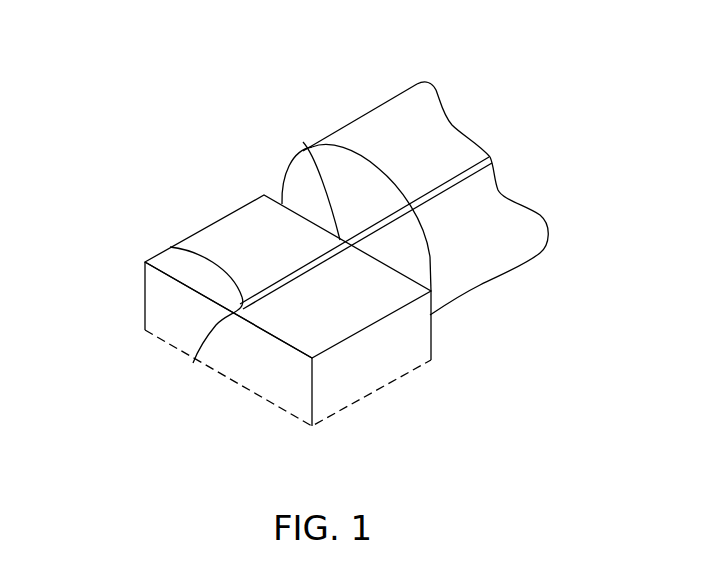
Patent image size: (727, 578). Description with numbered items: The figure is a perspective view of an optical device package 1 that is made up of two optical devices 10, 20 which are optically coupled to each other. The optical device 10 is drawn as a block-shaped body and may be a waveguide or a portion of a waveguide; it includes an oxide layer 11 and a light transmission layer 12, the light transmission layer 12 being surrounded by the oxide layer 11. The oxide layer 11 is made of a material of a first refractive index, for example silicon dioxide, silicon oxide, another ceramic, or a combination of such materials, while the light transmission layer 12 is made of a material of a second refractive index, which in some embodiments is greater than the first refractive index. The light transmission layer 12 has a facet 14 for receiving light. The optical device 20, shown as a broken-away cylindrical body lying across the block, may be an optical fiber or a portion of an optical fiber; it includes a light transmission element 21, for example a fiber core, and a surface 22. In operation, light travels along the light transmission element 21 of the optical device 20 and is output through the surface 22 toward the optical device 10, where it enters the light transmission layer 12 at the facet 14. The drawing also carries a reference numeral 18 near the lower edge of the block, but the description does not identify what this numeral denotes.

The optical device package 1 is at (188, 137).
The optical device 10 is at (70, 203).
The oxide layer 11 is at (173, 298).
The light transmission layer 12 is at (170, 247).
The facet 14 is at (388, 218).
The bore 18 is at (193, 362).
The optical device 20 is at (366, 126).
The light transmission element 21 is at (490, 157).
The surface 22 is at (305, 148).